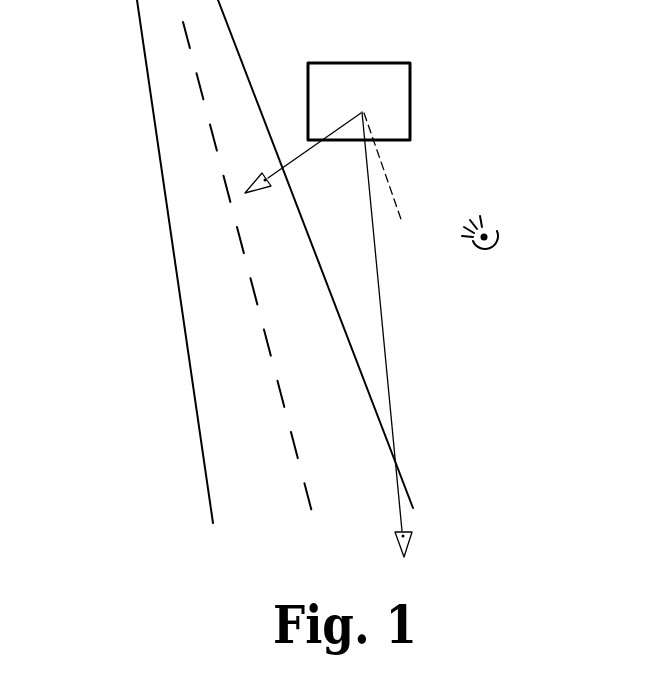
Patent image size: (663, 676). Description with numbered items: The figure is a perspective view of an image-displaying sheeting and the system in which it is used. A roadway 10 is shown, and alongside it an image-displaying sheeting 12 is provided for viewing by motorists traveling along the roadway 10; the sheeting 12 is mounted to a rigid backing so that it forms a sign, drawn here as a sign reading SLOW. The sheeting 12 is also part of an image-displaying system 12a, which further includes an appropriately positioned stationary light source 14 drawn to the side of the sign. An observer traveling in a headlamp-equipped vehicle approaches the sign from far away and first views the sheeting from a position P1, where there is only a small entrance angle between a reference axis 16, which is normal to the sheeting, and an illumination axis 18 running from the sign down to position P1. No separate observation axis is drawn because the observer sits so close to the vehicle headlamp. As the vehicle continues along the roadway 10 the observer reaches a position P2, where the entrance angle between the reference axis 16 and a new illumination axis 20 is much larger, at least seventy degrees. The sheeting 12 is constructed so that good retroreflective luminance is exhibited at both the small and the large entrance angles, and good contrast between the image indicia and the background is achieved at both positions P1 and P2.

The roadway 10 is at (160, 36).
The image-displaying sheeting 12 is at (375, 63).
The image-displaying system 12a is at (457, 100).
The stationary light source 14 is at (497, 231).
The reference axis 16 is at (402, 230).
The illumination axis 18 is at (392, 418).
The new illumination axis 20 is at (297, 155).
The first viewing position P1 is at (412, 543).
The second viewing position P2 is at (266, 179).